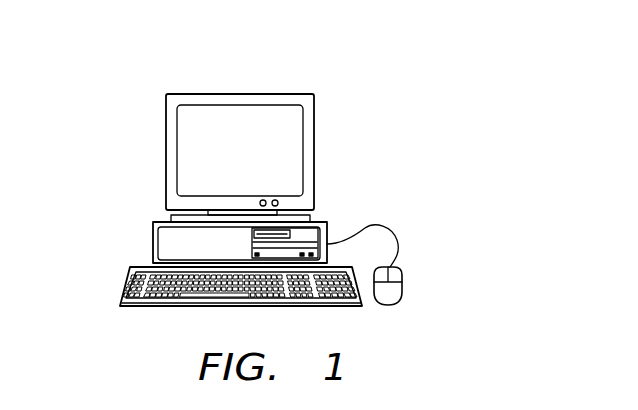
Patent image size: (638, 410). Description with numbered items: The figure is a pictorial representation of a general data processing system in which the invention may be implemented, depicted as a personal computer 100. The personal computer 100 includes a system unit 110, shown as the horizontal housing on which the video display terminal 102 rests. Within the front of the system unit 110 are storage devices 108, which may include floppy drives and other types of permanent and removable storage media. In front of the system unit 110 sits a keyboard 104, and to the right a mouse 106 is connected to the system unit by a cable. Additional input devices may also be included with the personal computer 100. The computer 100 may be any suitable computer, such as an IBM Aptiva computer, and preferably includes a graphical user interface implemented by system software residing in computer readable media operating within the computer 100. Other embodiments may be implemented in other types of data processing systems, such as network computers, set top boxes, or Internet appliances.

The personal computer 100 is at (261, 74).
The video display terminal 102 is at (183, 150).
The keyboard 104 is at (150, 287).
The mouse 106 is at (388, 305).
The storage devices 108 is at (317, 233).
The system unit 110 is at (152, 246).